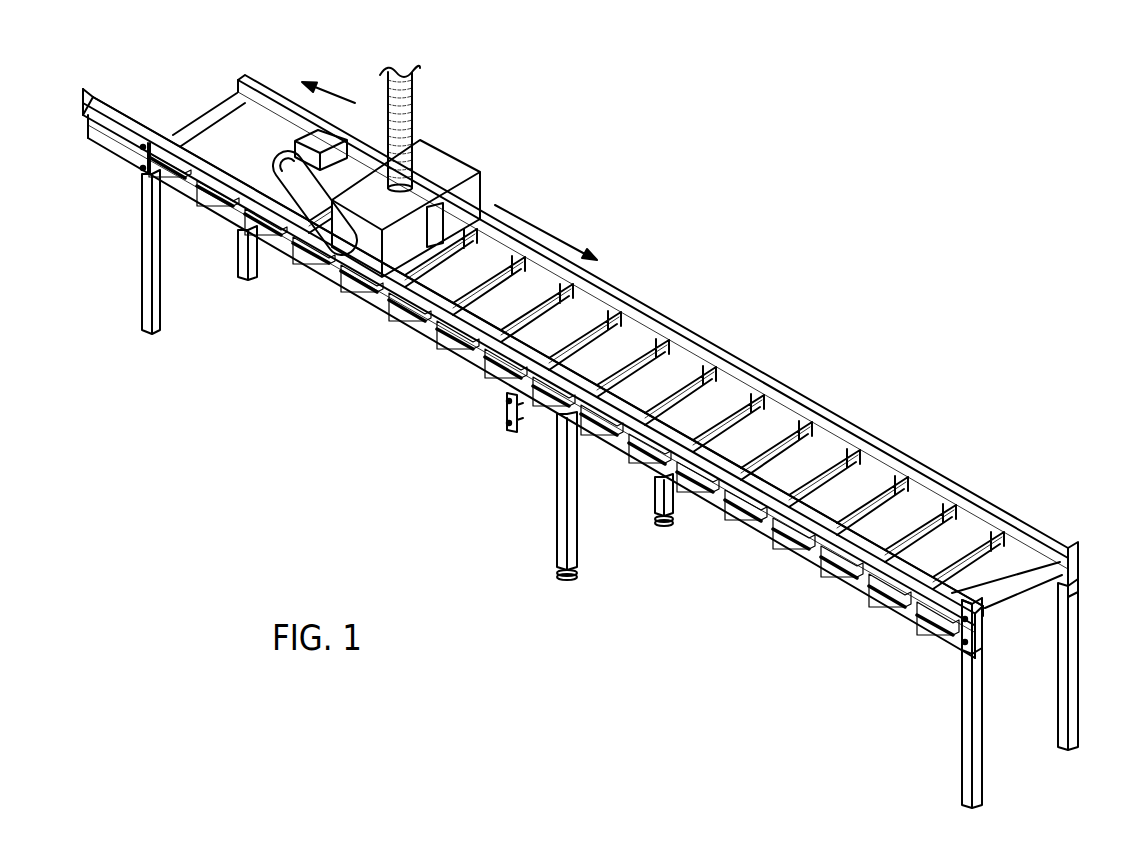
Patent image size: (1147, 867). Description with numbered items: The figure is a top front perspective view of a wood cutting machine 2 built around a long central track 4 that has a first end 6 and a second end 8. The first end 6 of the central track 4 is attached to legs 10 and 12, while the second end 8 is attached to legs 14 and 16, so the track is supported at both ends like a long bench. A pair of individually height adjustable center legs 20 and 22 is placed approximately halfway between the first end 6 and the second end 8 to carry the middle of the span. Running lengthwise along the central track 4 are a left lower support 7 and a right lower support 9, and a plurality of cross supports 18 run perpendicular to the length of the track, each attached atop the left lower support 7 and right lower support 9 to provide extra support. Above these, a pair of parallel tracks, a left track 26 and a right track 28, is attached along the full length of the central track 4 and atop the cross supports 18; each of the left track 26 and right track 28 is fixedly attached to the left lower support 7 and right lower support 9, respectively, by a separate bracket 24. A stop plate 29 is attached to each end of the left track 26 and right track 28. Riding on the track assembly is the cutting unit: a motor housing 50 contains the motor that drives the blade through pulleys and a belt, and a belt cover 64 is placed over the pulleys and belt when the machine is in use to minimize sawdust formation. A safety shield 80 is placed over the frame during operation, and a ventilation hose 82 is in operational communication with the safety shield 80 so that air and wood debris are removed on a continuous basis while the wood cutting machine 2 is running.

The wood cutting machine 2 is at (737, 327).
The central track 4 is at (742, 514).
The first end 6 is at (1078, 548).
The left lower support 7 is at (853, 585).
The second end 8 is at (265, 94).
The right lower support 9 is at (1052, 583).
The leg 10 is at (968, 765).
The leg 12 is at (1066, 710).
The leg 14 is at (146, 260).
The leg 16 is at (242, 245).
The cross supports 18 is at (790, 428).
The center leg 20 is at (556, 491).
The center leg 22 is at (658, 486).
The bracket 24 is at (506, 403).
The left track 26 is at (810, 528).
The right track 28 is at (897, 450).
The stop plate 29 is at (978, 632).
The motor housing 50 is at (333, 138).
The belt cover 64 is at (320, 249).
The safety shield 80 is at (455, 174).
The ventilation hose 82 is at (414, 124).